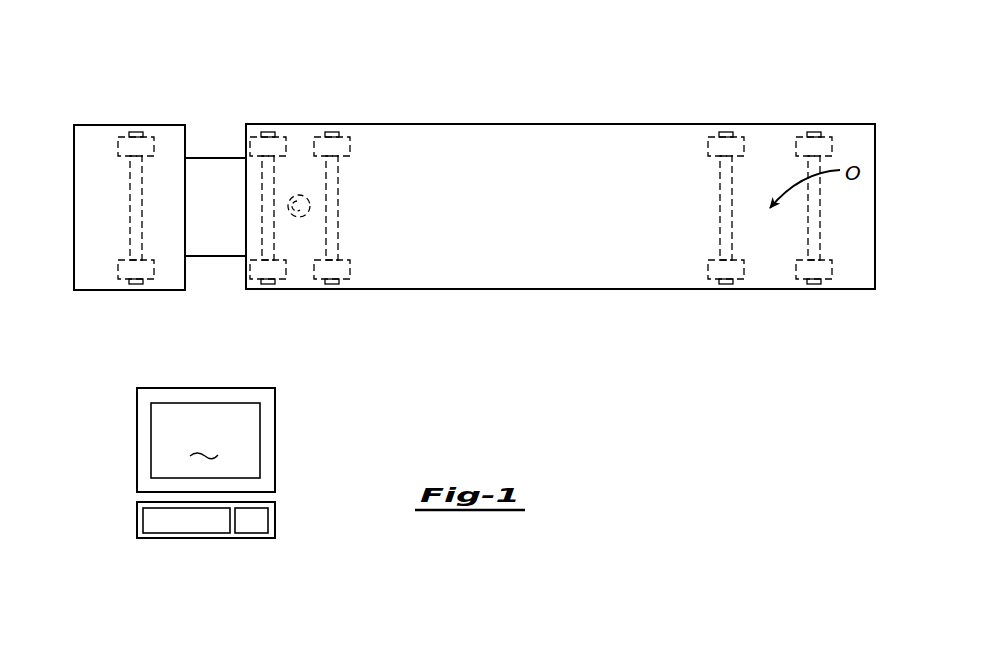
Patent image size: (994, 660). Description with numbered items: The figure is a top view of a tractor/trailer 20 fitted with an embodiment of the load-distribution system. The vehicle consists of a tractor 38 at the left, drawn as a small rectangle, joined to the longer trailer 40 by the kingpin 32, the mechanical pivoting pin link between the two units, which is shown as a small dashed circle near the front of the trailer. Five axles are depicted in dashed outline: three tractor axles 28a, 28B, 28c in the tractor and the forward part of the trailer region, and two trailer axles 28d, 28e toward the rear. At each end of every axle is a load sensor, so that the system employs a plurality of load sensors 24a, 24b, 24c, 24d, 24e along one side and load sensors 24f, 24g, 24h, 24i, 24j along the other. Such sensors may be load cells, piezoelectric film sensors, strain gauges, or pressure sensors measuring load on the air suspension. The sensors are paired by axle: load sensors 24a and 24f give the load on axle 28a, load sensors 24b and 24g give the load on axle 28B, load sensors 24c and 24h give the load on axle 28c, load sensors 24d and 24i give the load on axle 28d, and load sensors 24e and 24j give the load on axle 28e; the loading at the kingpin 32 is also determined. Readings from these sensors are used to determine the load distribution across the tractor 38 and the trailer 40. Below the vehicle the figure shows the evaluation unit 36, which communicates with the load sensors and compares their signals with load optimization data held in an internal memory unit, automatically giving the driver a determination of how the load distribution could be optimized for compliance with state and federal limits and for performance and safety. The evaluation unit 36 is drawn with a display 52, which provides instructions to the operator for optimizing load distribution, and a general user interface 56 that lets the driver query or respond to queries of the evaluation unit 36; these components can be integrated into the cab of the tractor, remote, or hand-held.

The tractor/trailer 20 is at (418, 55).
The tractor 38 is at (120, 78).
The trailer 40 is at (563, 78).
The load sensor 24a is at (118, 148).
The load sensor 24b is at (250, 148).
The load sensor 24c is at (313, 148).
The load sensor 24d is at (707, 148).
The load sensor 24e is at (796, 148).
The load sensor 24f is at (118, 268).
The load sensor 24g is at (250, 268).
The load sensor 24h is at (313, 268).
The load sensor 24i is at (707, 268).
The load sensor 24j is at (796, 268).
The axle 28a is at (130, 210).
The axle 28B is at (262, 225).
The axle 28c is at (338, 184).
The axle 28d is at (720, 214).
The axle 28e is at (820, 216).
The kingpin 32 is at (310, 205).
The evaluation unit 36 is at (275, 440).
The display 52 is at (204, 443).
The general user interface 56 is at (248, 523).